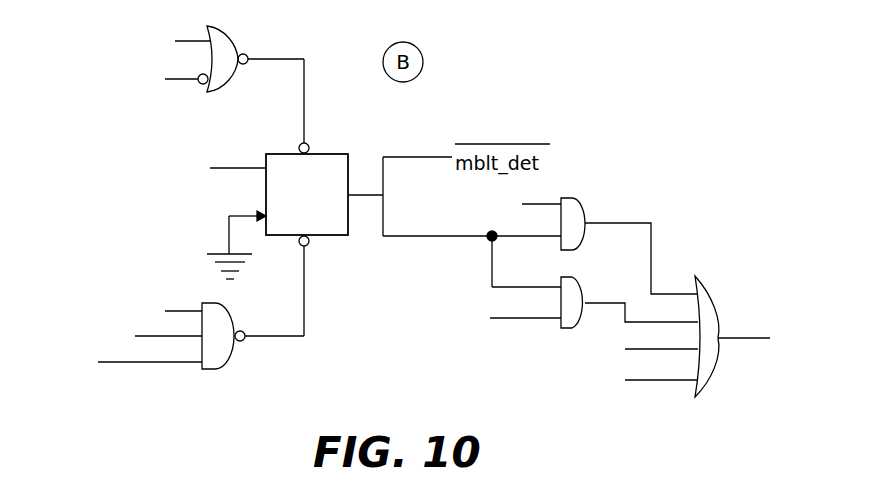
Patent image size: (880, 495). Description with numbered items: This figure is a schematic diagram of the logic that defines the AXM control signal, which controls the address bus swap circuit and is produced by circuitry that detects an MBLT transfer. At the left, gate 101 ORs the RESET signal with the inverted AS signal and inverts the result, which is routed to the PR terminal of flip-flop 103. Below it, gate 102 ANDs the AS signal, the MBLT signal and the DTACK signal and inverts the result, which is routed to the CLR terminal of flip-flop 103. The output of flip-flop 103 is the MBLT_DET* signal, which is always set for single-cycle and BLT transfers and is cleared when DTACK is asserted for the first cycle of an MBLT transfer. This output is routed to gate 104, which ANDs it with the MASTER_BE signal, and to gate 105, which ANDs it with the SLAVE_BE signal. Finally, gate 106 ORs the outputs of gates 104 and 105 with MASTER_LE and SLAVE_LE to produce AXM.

The gate 101 is at (218, 30).
The gate 102 is at (226, 367).
The flip-flop 103 is at (323, 153).
The gate 104 is at (570, 198).
The gate 105 is at (570, 277).
The gate 106 is at (706, 280).